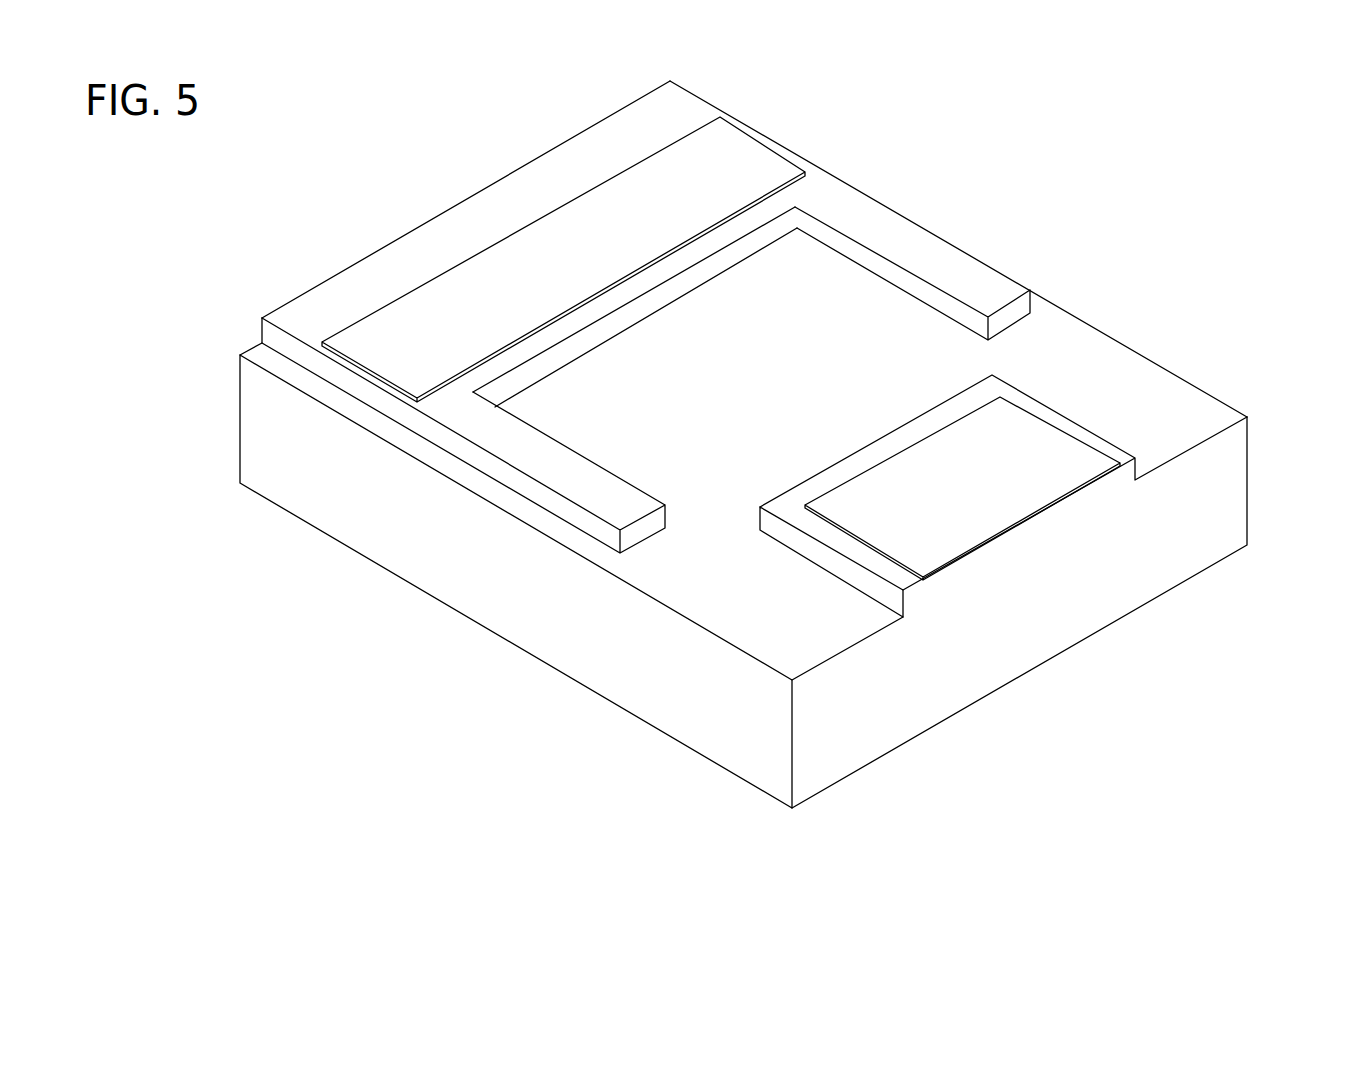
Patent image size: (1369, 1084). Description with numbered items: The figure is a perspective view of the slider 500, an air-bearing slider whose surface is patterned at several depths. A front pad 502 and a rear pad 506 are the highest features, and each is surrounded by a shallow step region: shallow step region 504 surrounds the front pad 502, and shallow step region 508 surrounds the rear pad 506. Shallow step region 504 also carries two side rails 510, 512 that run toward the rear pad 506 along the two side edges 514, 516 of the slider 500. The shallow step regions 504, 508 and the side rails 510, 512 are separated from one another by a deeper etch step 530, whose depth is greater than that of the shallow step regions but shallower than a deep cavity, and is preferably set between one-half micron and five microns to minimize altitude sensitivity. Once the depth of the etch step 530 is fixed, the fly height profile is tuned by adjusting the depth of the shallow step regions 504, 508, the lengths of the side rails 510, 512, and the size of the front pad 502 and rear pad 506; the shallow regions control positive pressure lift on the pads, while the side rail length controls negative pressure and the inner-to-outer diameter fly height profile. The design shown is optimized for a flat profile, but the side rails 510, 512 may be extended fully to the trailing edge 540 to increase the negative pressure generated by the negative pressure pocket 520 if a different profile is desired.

The slider 500 is at (1007, 178).
The front pad 502 is at (505, 262).
The shallow step region 504 is at (296, 320).
The rear pad 506 is at (990, 506).
The shallow step region 508 is at (1100, 441).
The side rail 510 is at (518, 450).
The side rail 512 is at (962, 275).
The side edge 514 is at (522, 573).
The side edge 516 is at (1122, 338).
The negative pressure pocket 520 is at (800, 323).
The etch step 530 is at (888, 598).
The trailing edge 540 is at (1210, 494).